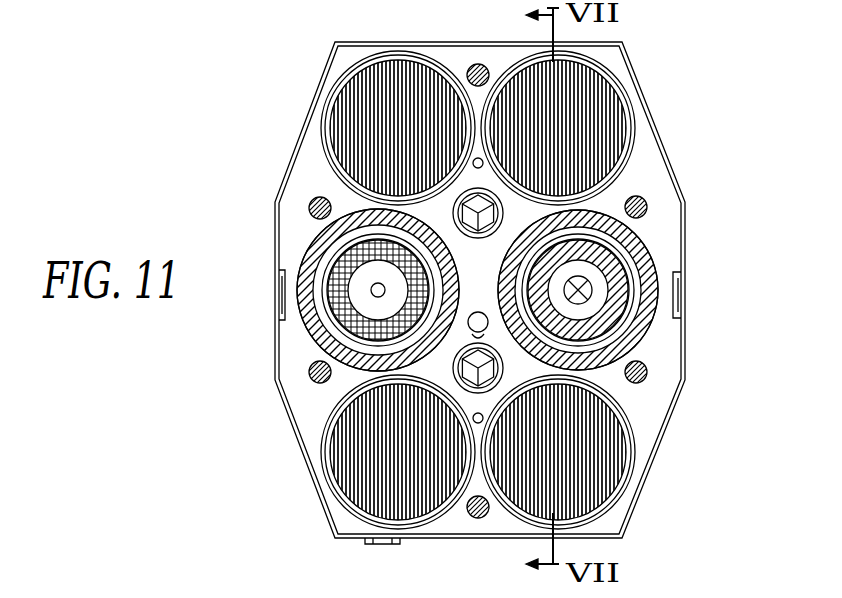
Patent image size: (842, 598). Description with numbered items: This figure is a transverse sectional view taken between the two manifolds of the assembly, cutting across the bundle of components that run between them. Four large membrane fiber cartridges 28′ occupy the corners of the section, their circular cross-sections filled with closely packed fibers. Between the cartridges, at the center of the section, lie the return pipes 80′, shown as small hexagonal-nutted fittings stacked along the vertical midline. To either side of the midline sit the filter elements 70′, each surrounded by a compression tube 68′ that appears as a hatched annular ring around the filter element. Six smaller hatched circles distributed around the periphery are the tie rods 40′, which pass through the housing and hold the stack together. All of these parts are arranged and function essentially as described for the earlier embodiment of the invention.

The membrane fiber cartridge 28′ is at (612, 478).
The tie rod 40′ is at (478, 520).
The return pipe 80′ is at (478, 345).
The filter element 70′ is at (607, 268).
The compression tube 68′ is at (642, 323).